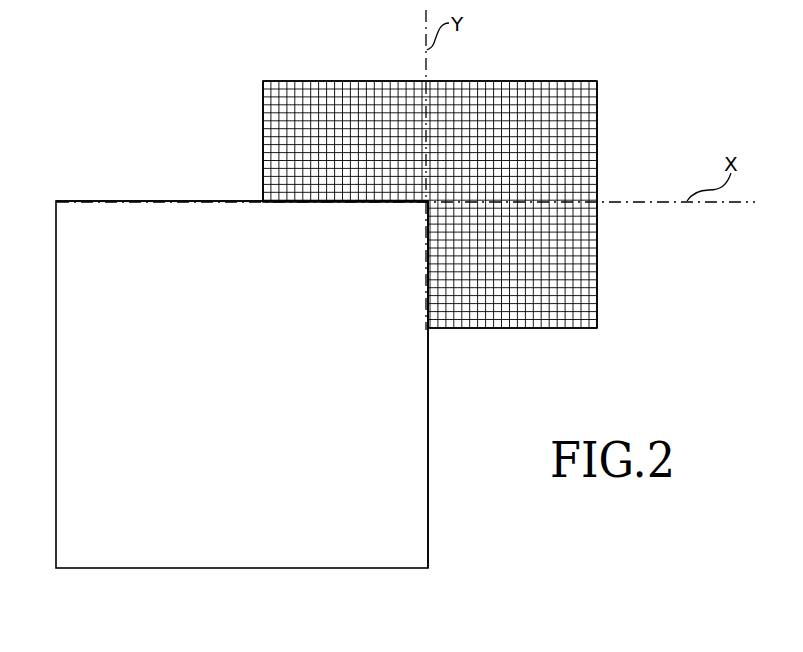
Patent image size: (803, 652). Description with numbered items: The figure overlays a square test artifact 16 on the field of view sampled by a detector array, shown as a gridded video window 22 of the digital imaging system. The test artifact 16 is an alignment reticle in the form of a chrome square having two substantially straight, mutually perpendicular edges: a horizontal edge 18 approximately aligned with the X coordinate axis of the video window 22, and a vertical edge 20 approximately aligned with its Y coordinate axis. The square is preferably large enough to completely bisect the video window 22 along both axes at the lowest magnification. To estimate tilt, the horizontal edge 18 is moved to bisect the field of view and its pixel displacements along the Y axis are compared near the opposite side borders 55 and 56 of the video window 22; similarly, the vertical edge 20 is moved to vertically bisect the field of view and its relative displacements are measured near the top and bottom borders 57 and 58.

The test artifact 16 is at (248, 381).
The horizontal edge 18 is at (100, 201).
The vertical edge 20 is at (428, 467).
The video window 22 is at (602, 117).
The side border 55 is at (262, 153).
The side border 56 is at (596, 147).
The top border 57 is at (349, 88).
The bottom border 58 is at (491, 328).